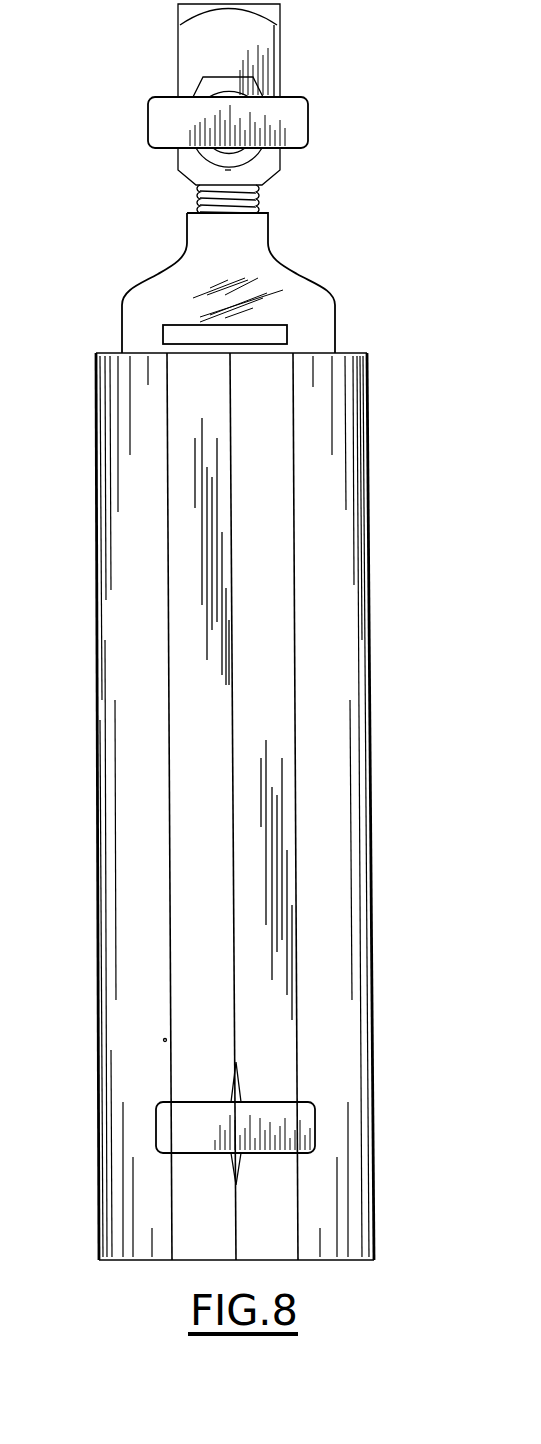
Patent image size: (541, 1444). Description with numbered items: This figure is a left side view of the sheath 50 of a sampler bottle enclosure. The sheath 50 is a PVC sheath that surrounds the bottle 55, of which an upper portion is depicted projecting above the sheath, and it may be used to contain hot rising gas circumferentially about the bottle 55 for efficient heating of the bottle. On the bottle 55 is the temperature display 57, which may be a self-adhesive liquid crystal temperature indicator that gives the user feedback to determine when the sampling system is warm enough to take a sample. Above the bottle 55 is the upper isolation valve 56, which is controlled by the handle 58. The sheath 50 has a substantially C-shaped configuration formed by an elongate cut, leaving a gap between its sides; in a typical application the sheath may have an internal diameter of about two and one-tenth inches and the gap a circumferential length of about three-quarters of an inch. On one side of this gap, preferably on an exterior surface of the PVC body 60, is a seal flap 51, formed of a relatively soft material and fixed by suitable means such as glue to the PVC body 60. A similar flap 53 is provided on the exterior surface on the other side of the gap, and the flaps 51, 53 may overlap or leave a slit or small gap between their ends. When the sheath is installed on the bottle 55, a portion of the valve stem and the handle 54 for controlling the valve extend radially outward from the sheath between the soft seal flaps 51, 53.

The sheath 50 is at (412, 480).
The seal flap 51 is at (195, 797).
The flap 53 is at (270, 1023).
The handle 54 is at (178, 1129).
The bottle 55 is at (147, 312).
The upper isolation valve 56 is at (268, 62).
The temperature display 57 is at (268, 335).
The handle 58 is at (162, 123).
The PVC body 60 is at (337, 597).